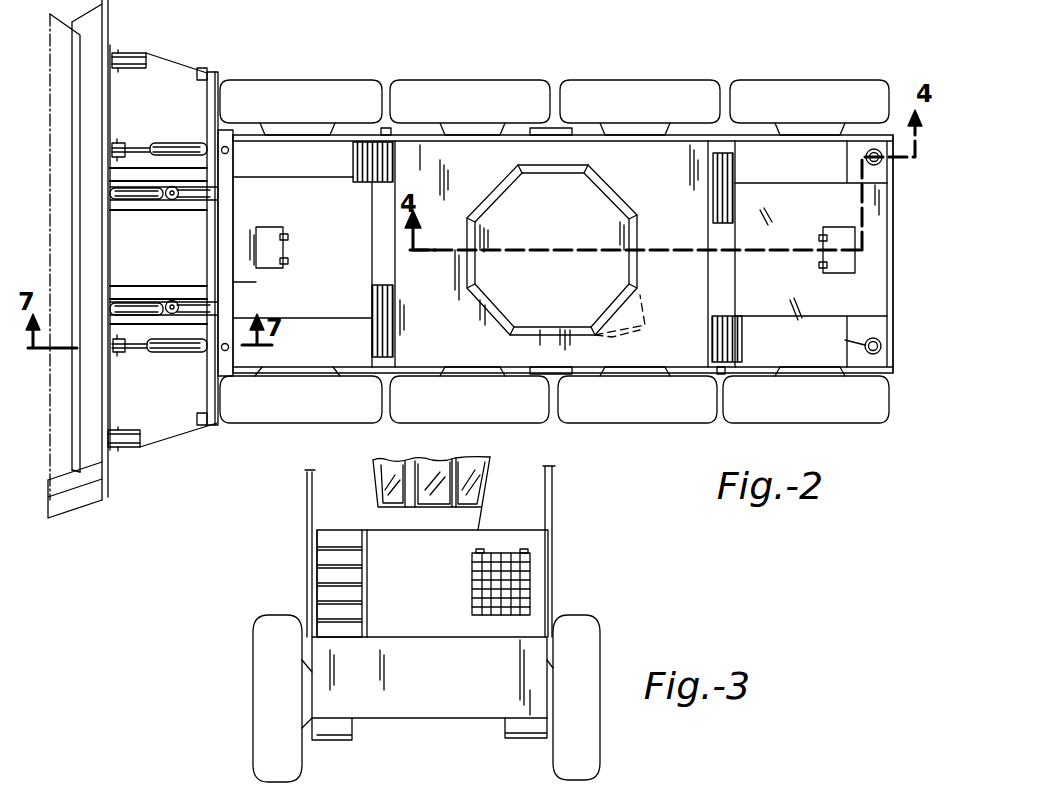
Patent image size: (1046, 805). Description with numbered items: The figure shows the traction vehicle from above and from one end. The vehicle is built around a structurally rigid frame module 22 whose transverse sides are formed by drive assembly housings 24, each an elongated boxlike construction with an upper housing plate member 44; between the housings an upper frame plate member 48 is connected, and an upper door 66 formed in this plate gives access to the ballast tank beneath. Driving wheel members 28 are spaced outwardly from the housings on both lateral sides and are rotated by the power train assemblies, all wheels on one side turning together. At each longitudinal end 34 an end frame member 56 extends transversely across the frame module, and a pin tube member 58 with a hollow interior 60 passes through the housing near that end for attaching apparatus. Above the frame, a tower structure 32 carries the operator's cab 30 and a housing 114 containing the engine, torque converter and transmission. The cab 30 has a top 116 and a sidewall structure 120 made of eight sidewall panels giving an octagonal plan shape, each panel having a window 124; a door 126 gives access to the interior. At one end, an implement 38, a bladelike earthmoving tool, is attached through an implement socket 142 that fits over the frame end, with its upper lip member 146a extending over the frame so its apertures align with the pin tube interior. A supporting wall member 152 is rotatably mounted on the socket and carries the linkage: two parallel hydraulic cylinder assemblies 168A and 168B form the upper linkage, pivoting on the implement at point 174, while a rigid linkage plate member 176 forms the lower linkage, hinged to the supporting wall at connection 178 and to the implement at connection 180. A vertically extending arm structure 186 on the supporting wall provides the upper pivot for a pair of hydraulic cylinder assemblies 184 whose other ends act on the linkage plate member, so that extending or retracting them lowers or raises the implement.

In FIG. 2, the frame module 22 is at (898, 194).
In FIG. 3, the frame module 22 is at (436, 634).
In FIG. 2, the drive assembly housing 24 is at (386, 128).
In FIG. 3, the drive assembly housing 24 is at (340, 726).
In FIG. 2, the driving wheel members 28 is at (538, 80).
In FIG. 3, the driving wheel members 28 is at (260, 705).
In FIG. 2, the operator's cab 30 is at (530, 218).
In FIG. 3, the operator's cab 30 is at (495, 472).
In FIG. 3, the tower structure 32 is at (553, 568).
In FIG. 2, the longitudinal end 34 is at (243, 145).
In FIG. 3, the longitudinal end 34 is at (412, 708).
In FIG. 2, the implement 38 is at (112, 40).
In FIG. 2, the upper housing plate member 44 is at (304, 175).
In FIG. 2, the upper frame plate member 48 is at (344, 224).
In FIG. 2, the end frame member 56 is at (170, 45).
In FIG. 3, the end frame member 56 is at (406, 685).
In FIG. 2, the pin tube member 58 is at (866, 155).
In FIG. 2, the hollow interior 60 is at (841, 338).
In FIG. 2, the upper door 66 is at (288, 247).
In FIG. 3, the housing 114 is at (421, 578).
In FIG. 2, the top 116 is at (595, 283).
In FIG. 2, the sidewall structure 120 is at (608, 188).
In FIG. 3, the sidewall structure 120 is at (373, 468).
In FIG. 3, the window 124 is at (388, 490).
In FIG. 2, the door 126 is at (625, 338).
In FIG. 2, the implement socket 142 is at (234, 222).
In FIG. 2, the upper transversely extending lip member 146a is at (226, 282).
In FIG. 2, the supporting wall member 152 is at (215, 75).
In FIG. 2, the hydraulic cylinder assembly 168A is at (172, 352).
In FIG. 2, the hydraulic cylinder assembly 168B is at (180, 143).
In FIG. 2, the pivot point 174 is at (124, 148).
In FIG. 2, the linkage plate member 176 is at (178, 435).
In FIG. 2, the hinged connection 178 is at (197, 78).
In FIG. 2, the hinged connection 180 is at (114, 68).
In FIG. 2, the hydraulic cylinder assemblies 184 is at (157, 190).
In FIG. 2, the arm structure 186 is at (190, 205).